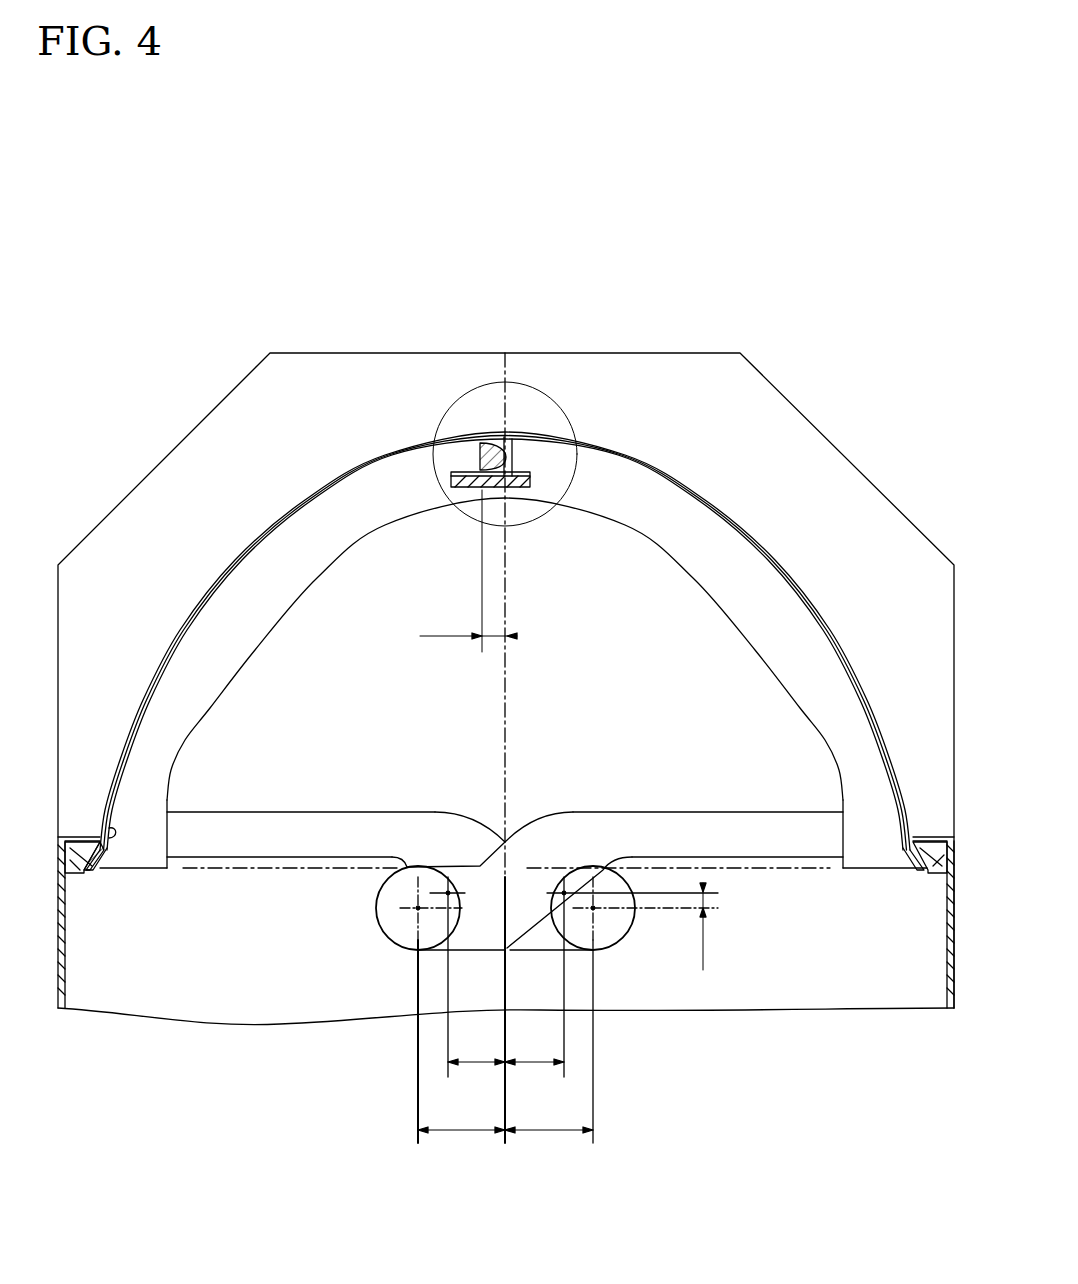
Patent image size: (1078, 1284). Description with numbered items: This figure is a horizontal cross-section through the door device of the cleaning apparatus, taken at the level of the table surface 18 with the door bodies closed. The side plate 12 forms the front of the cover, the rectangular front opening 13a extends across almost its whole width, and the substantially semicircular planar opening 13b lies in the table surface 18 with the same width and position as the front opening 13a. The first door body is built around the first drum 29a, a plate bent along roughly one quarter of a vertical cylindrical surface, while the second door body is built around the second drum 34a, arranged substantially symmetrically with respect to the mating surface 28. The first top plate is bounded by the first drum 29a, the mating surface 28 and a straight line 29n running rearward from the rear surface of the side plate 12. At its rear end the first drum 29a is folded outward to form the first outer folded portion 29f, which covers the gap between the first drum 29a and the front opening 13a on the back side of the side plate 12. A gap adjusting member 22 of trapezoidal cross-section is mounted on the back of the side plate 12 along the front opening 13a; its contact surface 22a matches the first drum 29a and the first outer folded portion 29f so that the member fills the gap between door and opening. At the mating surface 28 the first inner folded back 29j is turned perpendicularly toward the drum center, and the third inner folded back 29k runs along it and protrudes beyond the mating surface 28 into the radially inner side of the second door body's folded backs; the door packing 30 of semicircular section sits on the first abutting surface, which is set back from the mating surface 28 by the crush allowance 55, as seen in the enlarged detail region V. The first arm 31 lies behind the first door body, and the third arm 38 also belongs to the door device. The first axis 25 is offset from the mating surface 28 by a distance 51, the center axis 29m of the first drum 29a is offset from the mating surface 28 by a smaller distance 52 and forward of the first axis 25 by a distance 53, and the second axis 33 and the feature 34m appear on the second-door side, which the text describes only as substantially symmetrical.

The table surface 18 is at (183, 457).
The mating surface 28 is at (507, 376).
The first drum 29a is at (276, 515).
The planar opening 13b is at (322, 510).
The front opening 13a is at (107, 830).
The side plate 12 is at (929, 836).
The gap adjusting member 22 is at (73, 875).
The contact surface 22a is at (88, 870).
The first outer folded portion 29f is at (122, 869).
The second drum 34a is at (766, 548).
The first arm 31 is at (290, 858).
The third arm 38 is at (771, 858).
The straight line 29n is at (348, 861).
The left nose portion 34m is at (448, 892).
The center axis 29m is at (565, 892).
The second axis 33 is at (417, 909).
The first axis 25 is at (594, 909).
The detail view circle V is at (543, 392).
The door packing 30 is at (492, 455).
The third inner folded back 29k is at (478, 487).
The first inner folded back 29j is at (480, 457).
The crush allowance 55 is at (468, 571).
The distance 53 is at (689, 926).
The distance 52 is at (506, 1050).
The distance 51 is at (505, 1117).